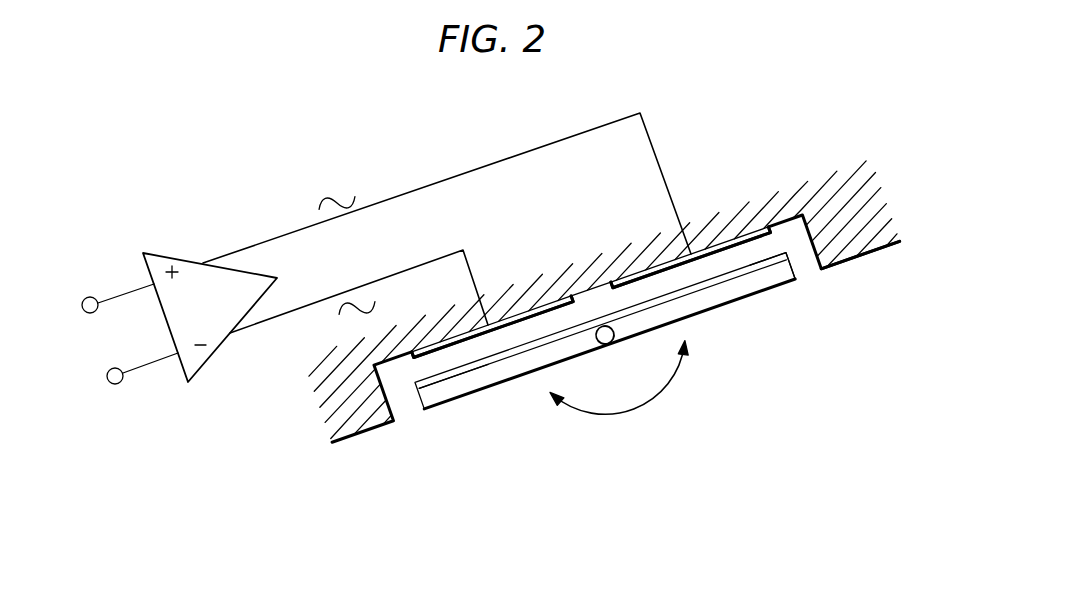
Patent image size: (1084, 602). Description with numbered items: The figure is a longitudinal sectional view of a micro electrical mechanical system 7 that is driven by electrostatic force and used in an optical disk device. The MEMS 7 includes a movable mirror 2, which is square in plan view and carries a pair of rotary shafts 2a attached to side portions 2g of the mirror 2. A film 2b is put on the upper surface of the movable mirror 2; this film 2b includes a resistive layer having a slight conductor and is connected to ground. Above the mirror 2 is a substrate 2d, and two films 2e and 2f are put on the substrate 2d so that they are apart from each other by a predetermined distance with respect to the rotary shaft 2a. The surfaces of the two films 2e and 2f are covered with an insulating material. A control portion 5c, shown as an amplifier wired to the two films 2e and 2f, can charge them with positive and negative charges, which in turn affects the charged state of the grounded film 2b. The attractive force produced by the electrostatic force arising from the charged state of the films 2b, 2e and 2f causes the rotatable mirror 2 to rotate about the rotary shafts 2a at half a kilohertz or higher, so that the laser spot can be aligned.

The control portion 5c is at (175, 258).
The micro electrical mechanical system 7 is at (400, 436).
The movable mirror 2 is at (722, 295).
The rotary shafts 2a is at (602, 327).
The film 2b is at (787, 253).
The substrate 2d is at (862, 258).
The film 2e is at (755, 235).
The film 2f is at (538, 312).
The side portions 2g is at (474, 383).